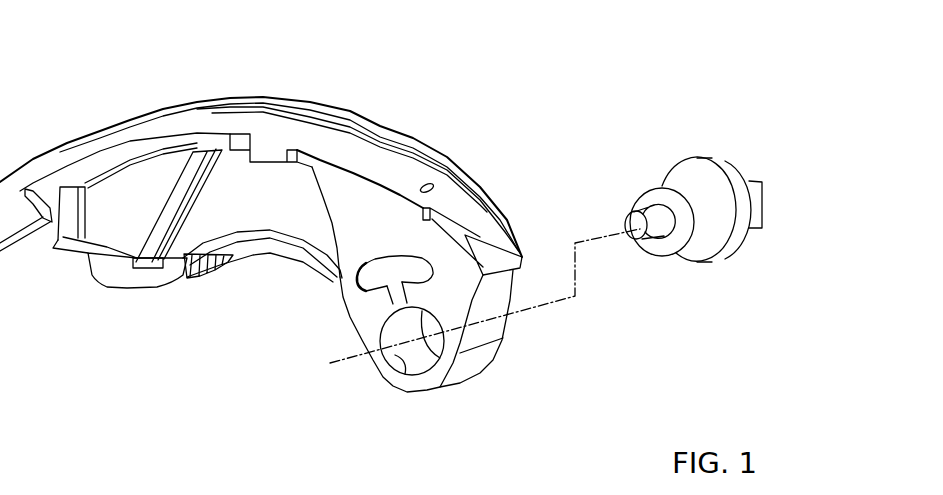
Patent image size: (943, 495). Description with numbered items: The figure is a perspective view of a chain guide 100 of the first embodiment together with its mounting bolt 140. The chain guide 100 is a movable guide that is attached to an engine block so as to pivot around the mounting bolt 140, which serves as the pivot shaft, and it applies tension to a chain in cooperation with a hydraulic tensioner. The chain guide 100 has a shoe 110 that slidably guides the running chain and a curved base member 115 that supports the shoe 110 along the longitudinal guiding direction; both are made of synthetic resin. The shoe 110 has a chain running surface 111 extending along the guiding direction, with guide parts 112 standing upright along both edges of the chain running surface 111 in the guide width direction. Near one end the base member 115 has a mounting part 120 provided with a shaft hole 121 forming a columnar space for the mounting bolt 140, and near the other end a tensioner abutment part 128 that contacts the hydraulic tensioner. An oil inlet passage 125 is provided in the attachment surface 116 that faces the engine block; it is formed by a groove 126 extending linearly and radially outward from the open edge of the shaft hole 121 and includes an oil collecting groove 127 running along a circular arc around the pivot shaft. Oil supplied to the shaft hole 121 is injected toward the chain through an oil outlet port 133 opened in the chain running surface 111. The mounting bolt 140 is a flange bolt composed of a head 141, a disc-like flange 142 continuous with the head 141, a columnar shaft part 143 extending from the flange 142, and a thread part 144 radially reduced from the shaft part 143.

The chain guide 100 is at (228, 88).
The shoe 110 is at (278, 98).
The chain running surface 111 is at (402, 167).
The guide parts 112 is at (120, 127).
The base member 115 is at (152, 180).
The attachment surface 116 is at (368, 212).
The mounting part 120 is at (430, 392).
The shaft hole 121 is at (405, 363).
The oil inlet passage 125 is at (237, 308).
The groove 126 is at (395, 302).
The oil collecting groove 127 is at (356, 286).
The tensioner abutment part 128 is at (141, 288).
The oil outlet port 133 is at (430, 187).
The mounting bolt 140 is at (772, 58).
The head 141 is at (758, 178).
The flange 142 is at (706, 164).
The shaft part 143 is at (688, 190).
The thread part 144 is at (639, 228).